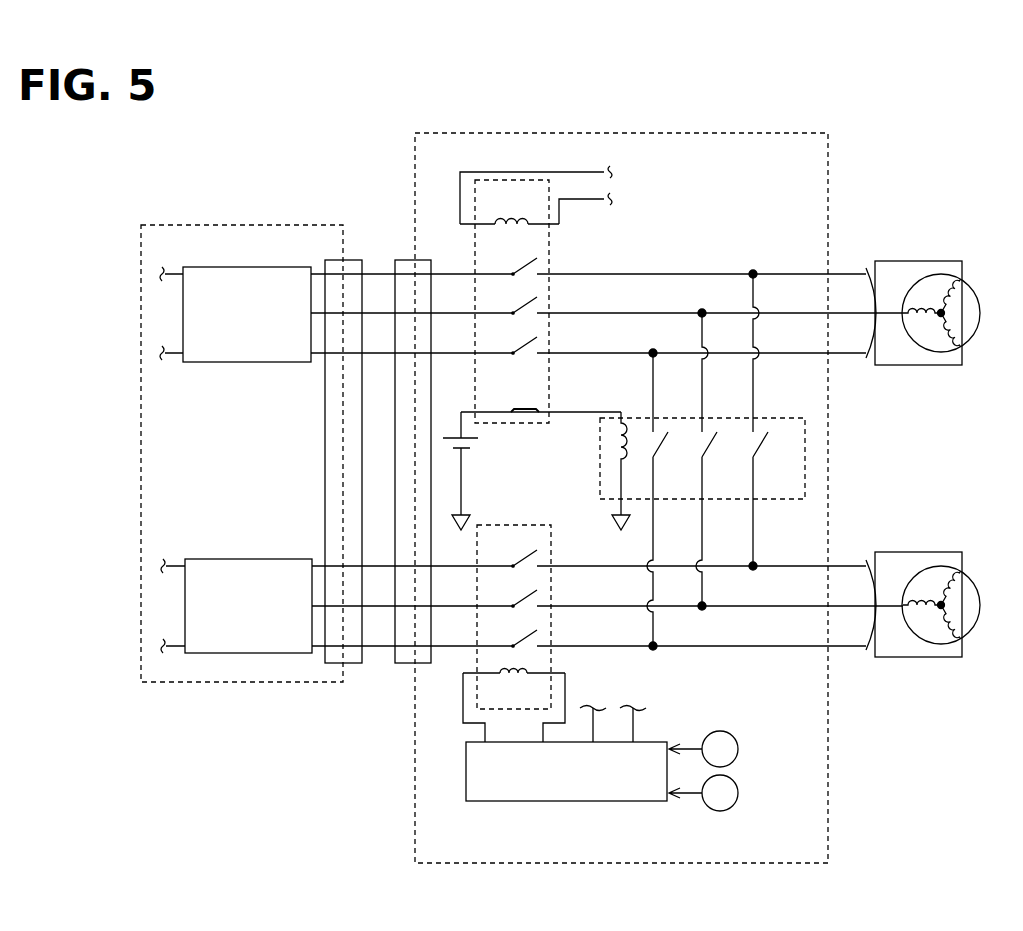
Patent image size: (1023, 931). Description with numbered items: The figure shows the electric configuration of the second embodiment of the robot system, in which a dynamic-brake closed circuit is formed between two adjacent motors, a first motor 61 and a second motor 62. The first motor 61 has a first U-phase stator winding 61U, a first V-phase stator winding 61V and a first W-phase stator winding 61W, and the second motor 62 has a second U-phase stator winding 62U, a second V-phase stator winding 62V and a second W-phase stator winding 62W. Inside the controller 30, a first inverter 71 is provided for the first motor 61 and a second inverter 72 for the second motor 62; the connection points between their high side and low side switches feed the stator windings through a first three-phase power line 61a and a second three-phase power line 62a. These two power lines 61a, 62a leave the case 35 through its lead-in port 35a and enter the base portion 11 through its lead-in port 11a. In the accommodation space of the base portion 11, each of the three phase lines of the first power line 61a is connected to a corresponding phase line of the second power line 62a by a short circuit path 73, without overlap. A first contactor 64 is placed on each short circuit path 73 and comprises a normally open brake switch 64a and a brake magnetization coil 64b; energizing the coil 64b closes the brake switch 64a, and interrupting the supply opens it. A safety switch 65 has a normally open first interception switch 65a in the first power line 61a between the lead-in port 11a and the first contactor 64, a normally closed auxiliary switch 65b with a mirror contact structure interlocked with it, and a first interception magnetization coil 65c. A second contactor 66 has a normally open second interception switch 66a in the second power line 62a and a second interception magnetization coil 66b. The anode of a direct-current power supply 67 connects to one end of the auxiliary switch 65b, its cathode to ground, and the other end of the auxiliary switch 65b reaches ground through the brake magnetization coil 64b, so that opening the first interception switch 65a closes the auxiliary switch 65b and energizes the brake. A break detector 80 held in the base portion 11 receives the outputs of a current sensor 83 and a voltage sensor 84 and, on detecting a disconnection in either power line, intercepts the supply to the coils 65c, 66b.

The base portion 11 is at (829, 164).
The lead-in port of the base portion 11a is at (410, 260).
The controller 30 is at (135, 203).
The case 35 is at (312, 225).
The lead-in port of the case 35a is at (347, 260).
The first motor 61 is at (908, 322).
The first three-phase power line 61a is at (866, 268).
The first U-phase stator winding 61U is at (953, 276).
The first V-phase stator winding 61V is at (918, 355).
The first W-phase stator winding 61W is at (947, 366).
The second motor 62 is at (917, 597).
The second three-phase power line 62a is at (866, 560).
The second U-phase stator winding 62U is at (948, 552).
The second V-phase stator winding 62V is at (924, 575).
The second W-phase stator winding 62W is at (948, 645).
The first contactor 64 is at (788, 418).
The brake switch 64a is at (767, 453).
The brake magnetization coil 64b is at (615, 449).
The safety switch 65 is at (550, 255).
The first interception switch 65a is at (527, 263).
The auxiliary switch 65b is at (511, 410).
The first interception magnetization coil 65c is at (536, 195).
The second contactor 66 is at (552, 545).
The second interception switch 66a is at (527, 555).
The second interception magnetization coil 66b is at (513, 676).
The direct-current power supply 67 is at (453, 437).
The first inverter 71 is at (282, 267).
The second inverter 72 is at (283, 559).
The short circuit path 73 is at (753, 556).
The break detector 80 is at (634, 802).
The current sensor 83 is at (738, 794).
The voltage sensor 84 is at (738, 750).